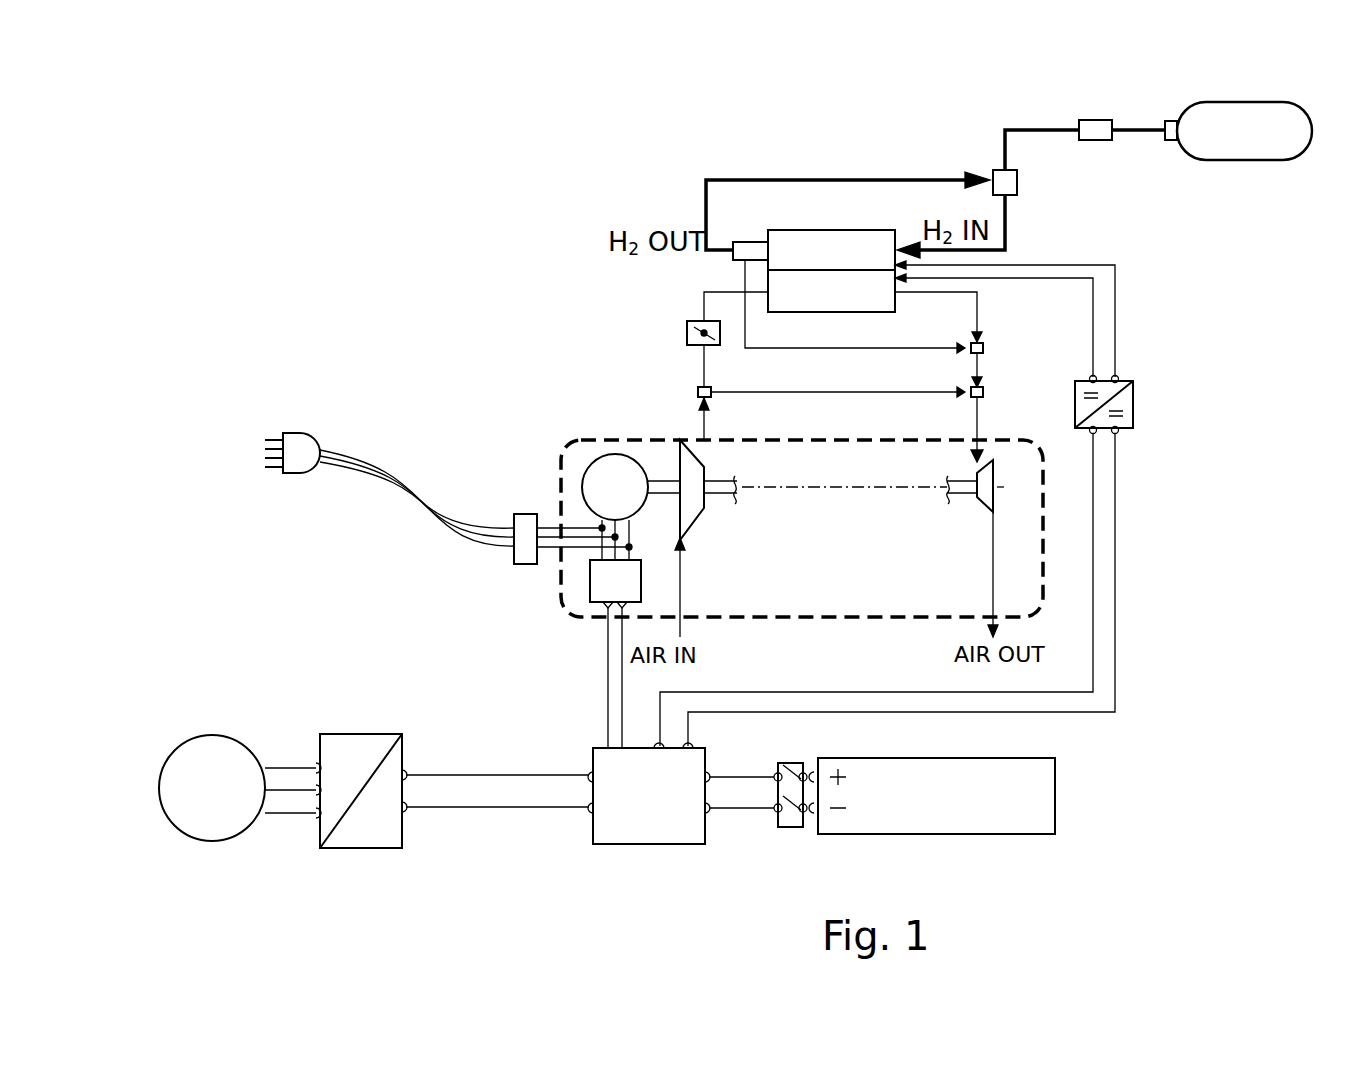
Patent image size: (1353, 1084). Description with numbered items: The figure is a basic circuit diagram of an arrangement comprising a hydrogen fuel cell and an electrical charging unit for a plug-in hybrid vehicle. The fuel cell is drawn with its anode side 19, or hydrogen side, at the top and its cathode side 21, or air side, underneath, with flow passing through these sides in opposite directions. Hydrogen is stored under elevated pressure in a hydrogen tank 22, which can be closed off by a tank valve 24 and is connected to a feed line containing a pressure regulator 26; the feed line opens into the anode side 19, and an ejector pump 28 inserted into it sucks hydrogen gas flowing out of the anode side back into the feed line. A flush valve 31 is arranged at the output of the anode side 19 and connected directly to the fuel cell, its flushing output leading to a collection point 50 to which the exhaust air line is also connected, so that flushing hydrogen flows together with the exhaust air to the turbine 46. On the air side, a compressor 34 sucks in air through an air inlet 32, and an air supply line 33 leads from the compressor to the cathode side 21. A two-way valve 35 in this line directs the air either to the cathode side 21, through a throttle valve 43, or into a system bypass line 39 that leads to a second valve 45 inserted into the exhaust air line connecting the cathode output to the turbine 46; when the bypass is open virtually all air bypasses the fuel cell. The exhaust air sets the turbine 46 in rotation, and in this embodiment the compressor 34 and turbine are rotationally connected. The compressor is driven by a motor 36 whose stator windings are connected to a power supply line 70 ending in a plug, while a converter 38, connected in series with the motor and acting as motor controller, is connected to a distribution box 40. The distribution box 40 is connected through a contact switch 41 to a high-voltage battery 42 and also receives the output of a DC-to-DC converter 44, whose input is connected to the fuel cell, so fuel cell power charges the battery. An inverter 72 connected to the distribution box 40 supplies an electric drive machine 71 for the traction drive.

The anode side 19 is at (800, 240).
The cathode side 21 is at (845, 282).
The hydrogen tank 22 is at (1243, 160).
The tank valve 24 is at (1172, 142).
The pressure regulator 26 is at (1099, 118).
The ejector pump 28 is at (1017, 182).
The flush valve 31 is at (752, 250).
The air inlet 32 is at (682, 622).
The air supply line 33 is at (703, 430).
The compressor 34 is at (720, 495).
The valve 35 is at (696, 392).
The motor 36 is at (582, 487).
The converter 38 is at (590, 583).
The system bypass line 39 is at (733, 392).
The distribution box 40 is at (653, 833).
The contact switch 41 is at (793, 830).
The high-voltage battery 42 is at (1055, 795).
The throttle valve 43 is at (687, 330).
The DC-to-DC converter 44 is at (1133, 404).
The second valve 45 is at (984, 392).
The turbine 46 is at (973, 495).
The collection point 50 is at (984, 348).
The power supply line 70 is at (514, 550).
The electric drive machine 71 is at (212, 735).
The inverter 72 is at (362, 733).